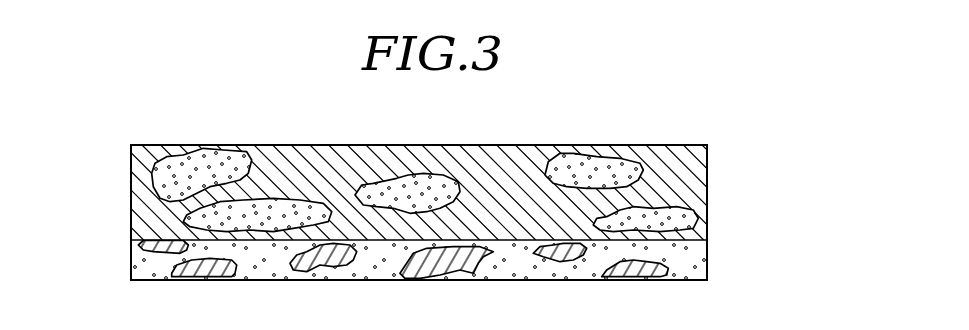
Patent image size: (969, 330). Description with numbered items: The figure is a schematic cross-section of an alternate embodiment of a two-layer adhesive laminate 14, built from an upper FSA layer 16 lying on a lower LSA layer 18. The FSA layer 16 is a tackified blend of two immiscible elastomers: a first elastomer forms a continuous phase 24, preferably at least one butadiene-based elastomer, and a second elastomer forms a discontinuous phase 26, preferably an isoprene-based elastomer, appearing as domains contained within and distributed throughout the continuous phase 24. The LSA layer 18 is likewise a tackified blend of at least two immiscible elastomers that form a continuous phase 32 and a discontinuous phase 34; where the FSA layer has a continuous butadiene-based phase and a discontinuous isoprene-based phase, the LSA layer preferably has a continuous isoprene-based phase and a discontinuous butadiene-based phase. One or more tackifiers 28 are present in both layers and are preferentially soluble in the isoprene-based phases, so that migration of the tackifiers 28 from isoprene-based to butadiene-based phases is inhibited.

The two-layer adhesive laminate 14 is at (413, 212).
The FSA layer 16 is at (413, 172).
The LSA layer 18 is at (443, 273).
The continuous phase 24 is at (307, 155).
The discontinuous phase 26 is at (420, 178).
The tackifier 28 is at (585, 150).
The continuous phase 32 is at (163, 265).
The discontinuous phase 34 is at (318, 265).